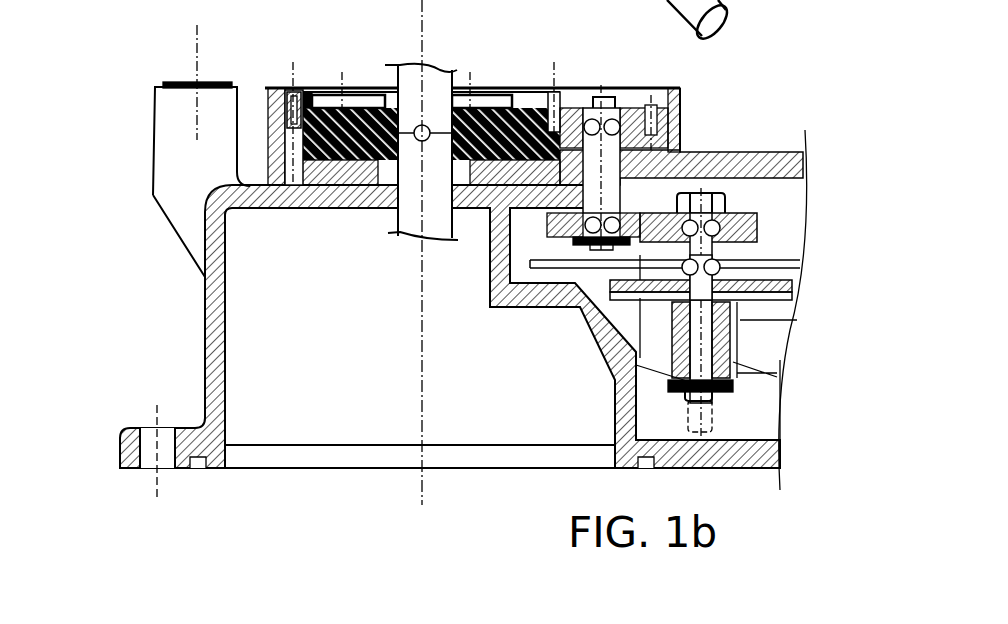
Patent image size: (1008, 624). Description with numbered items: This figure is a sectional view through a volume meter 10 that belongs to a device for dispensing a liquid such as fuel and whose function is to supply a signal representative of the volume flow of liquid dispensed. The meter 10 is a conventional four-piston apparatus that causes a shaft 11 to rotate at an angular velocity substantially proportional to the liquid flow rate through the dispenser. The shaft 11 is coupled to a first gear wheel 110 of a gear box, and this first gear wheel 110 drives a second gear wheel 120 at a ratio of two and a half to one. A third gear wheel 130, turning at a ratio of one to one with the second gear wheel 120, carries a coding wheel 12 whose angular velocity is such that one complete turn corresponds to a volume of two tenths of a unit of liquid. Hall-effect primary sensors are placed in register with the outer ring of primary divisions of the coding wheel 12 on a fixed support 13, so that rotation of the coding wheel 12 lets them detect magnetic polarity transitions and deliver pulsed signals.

The volume meter 10 is at (448, 41).
The shaft 11 is at (412, 66).
The first gear wheel 110 is at (309, 90).
The second gear wheel 120 is at (683, 128).
The third gear wheel 130 is at (757, 222).
The fixed support 13 is at (783, 250).
The coding wheel 12 is at (753, 312).